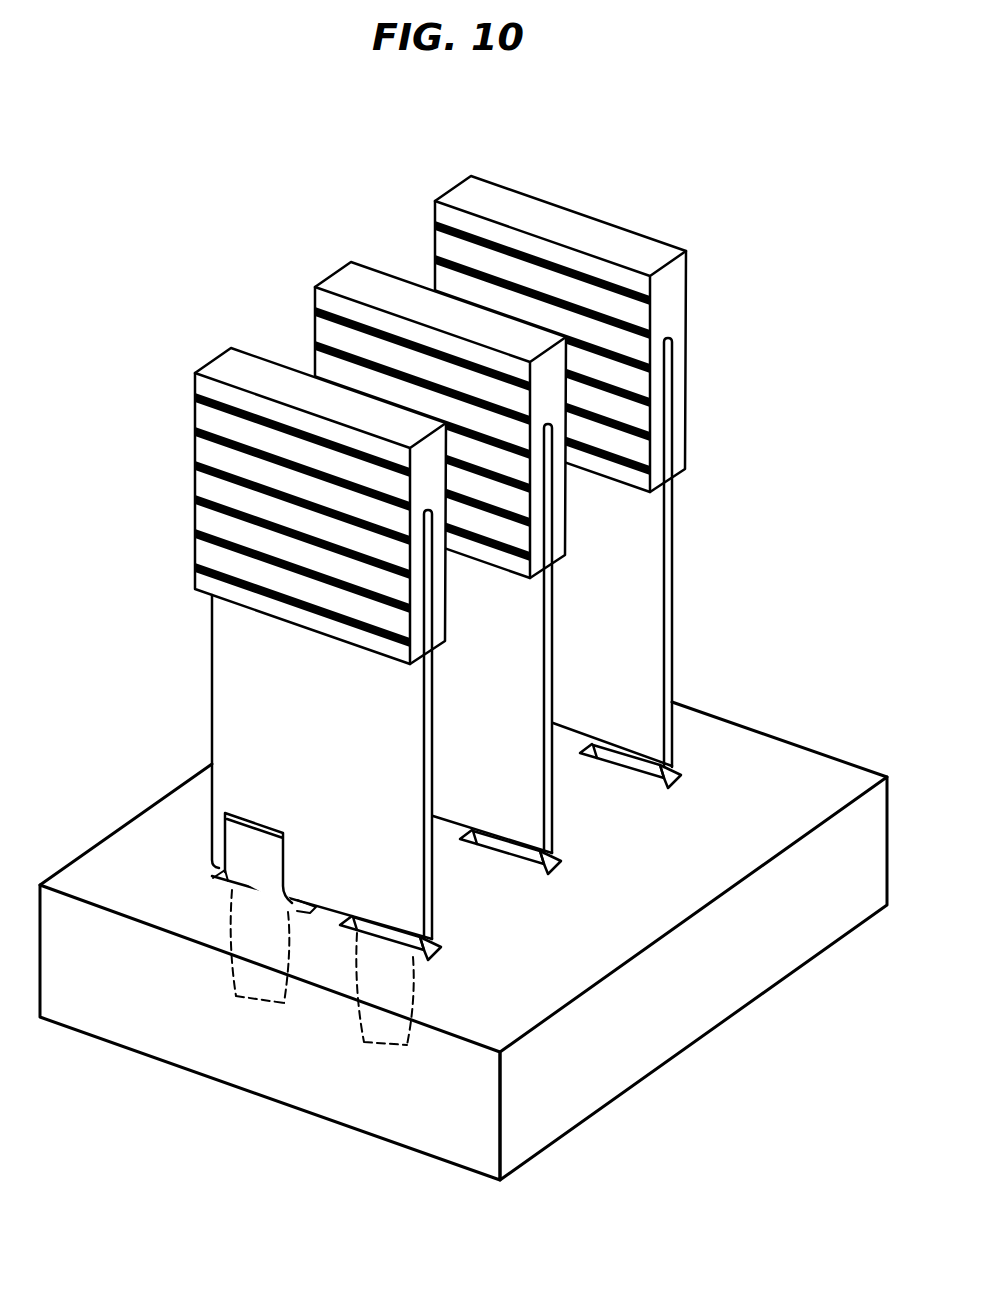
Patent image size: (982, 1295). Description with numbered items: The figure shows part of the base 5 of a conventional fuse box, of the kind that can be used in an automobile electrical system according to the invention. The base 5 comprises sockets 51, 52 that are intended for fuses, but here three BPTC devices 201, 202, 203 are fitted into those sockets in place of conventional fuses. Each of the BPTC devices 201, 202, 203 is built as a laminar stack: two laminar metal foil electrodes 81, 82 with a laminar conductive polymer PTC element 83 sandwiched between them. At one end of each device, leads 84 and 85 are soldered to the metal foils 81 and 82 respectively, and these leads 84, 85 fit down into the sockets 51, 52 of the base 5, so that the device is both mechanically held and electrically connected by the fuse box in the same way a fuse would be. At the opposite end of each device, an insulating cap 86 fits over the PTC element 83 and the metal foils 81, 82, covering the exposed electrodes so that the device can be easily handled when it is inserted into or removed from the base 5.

The base 5 is at (608, 1078).
The insulating cap 86 is at (467, 190).
The BPTC device 201 is at (321, 731).
The BPTC device 202 is at (504, 728).
The BPTC device 203 is at (631, 642).
The laminar metal foil electrode 81 is at (232, 738).
The laminar metal foil electrode 82 is at (436, 918).
The laminar conductive polymer PTC element 83 is at (435, 872).
The socket 51 is at (226, 876).
The socket 52 is at (674, 781).
The lead 84 is at (248, 975).
The lead 85 is at (386, 1033).